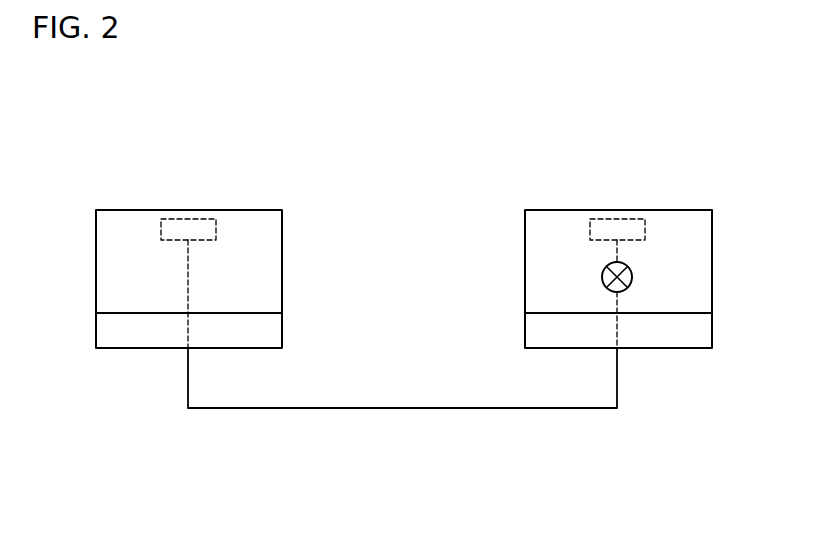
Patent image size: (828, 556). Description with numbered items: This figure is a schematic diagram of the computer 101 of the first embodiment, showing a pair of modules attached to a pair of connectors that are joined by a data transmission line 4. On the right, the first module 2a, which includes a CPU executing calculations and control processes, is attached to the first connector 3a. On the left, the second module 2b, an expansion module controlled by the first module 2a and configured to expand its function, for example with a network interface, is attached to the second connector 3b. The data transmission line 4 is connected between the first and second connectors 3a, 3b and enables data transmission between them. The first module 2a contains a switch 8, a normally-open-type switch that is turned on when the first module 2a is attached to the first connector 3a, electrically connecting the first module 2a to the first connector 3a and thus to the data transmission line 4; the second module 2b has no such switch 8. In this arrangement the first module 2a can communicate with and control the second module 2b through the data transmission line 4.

The computer 101 is at (423, 150).
The first module 2a is at (553, 225).
The second module 2b is at (123, 225).
The first connector 3a is at (660, 332).
The second connector 3b is at (143, 332).
The data transmission line 4 is at (403, 410).
The switch 8 is at (632, 277).